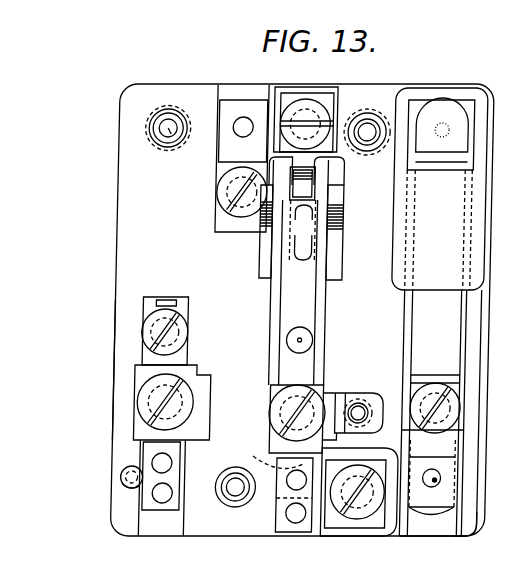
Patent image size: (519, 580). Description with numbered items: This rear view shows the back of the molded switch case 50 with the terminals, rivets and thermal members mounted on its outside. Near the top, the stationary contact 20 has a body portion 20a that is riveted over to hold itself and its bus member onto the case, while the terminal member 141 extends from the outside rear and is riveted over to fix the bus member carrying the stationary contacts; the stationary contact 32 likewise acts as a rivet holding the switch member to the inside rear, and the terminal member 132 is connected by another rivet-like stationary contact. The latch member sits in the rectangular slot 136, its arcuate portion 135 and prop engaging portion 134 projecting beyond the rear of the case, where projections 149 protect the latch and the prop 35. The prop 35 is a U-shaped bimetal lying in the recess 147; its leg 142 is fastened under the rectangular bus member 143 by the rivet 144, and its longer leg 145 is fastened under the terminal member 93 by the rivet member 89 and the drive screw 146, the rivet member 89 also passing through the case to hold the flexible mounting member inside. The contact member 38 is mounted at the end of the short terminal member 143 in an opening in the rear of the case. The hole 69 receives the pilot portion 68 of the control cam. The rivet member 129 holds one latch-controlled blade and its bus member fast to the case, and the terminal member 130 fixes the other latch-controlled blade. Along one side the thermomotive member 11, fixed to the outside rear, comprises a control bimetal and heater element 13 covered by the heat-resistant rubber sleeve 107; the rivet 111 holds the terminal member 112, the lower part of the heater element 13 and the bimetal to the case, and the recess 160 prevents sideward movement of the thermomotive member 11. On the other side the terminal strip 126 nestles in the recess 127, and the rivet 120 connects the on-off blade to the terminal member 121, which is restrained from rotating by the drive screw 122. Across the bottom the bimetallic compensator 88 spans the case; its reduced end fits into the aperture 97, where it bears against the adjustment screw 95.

The switch case 50 is at (188, 90).
The stationary contact 20 is at (153, 117).
The body portion 20a is at (169, 140).
The terminal member 132 is at (227, 217).
The terminal member 141 is at (305, 103).
The stationary contact 32 is at (367, 110).
The rectangular slot 136 is at (340, 162).
The arcuate portion 135 is at (319, 184).
The projections 149 is at (268, 242).
The prop engaging portion 134 is at (340, 212).
The recess 147 is at (332, 238).
The leg 142 is at (323, 293).
The prop 35 is at (279, 293).
The longer leg 145 is at (288, 357).
The hole 69 is at (307, 327).
The pilot portion 68 is at (314, 342).
The rivet 144 is at (293, 393).
The terminal member 93 is at (288, 425).
The rectangular bus member 143 is at (360, 393).
The contact member 38 is at (379, 410).
The rivet member 89 is at (303, 483).
The drive screw 146 is at (308, 517).
The rivet member 129 is at (246, 492).
The terminal member 130 is at (371, 510).
The thermomotive member 11 is at (453, 321).
The sleeve 107 is at (467, 335).
The terminal member 112 is at (435, 388).
The heater element 13 is at (441, 513).
The rivet 111 is at (451, 480).
The recess 160 is at (482, 530).
The recess 127 is at (161, 297).
The terminal strip 126 is at (152, 362).
The terminal member 121 is at (145, 382).
The rivet 120 is at (170, 460).
The drive screw 122 is at (173, 500).
The aperture 97 is at (137, 467).
The adjustment screw 95 is at (133, 480).
The compensator 88 is at (143, 490).